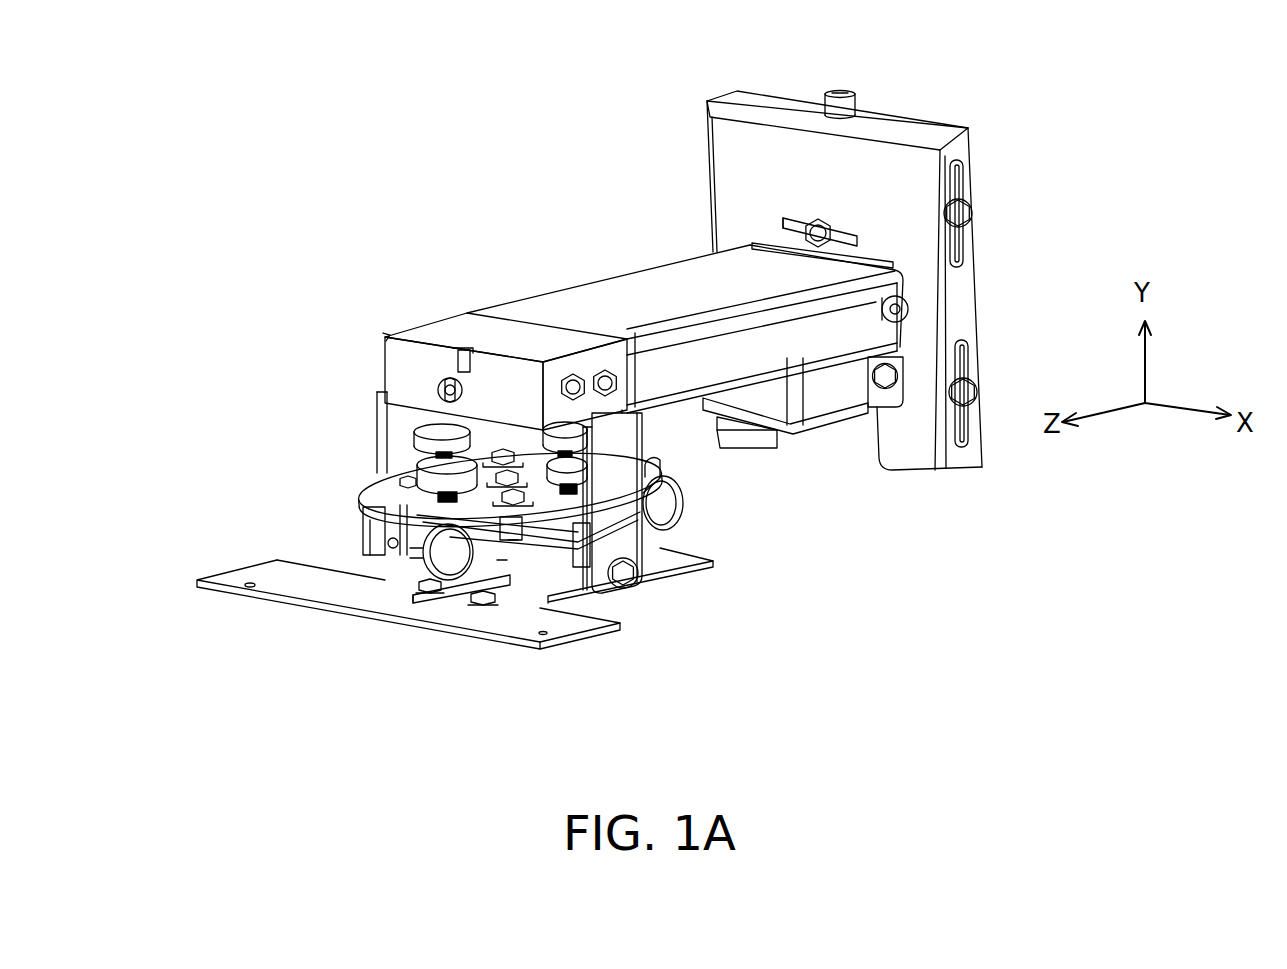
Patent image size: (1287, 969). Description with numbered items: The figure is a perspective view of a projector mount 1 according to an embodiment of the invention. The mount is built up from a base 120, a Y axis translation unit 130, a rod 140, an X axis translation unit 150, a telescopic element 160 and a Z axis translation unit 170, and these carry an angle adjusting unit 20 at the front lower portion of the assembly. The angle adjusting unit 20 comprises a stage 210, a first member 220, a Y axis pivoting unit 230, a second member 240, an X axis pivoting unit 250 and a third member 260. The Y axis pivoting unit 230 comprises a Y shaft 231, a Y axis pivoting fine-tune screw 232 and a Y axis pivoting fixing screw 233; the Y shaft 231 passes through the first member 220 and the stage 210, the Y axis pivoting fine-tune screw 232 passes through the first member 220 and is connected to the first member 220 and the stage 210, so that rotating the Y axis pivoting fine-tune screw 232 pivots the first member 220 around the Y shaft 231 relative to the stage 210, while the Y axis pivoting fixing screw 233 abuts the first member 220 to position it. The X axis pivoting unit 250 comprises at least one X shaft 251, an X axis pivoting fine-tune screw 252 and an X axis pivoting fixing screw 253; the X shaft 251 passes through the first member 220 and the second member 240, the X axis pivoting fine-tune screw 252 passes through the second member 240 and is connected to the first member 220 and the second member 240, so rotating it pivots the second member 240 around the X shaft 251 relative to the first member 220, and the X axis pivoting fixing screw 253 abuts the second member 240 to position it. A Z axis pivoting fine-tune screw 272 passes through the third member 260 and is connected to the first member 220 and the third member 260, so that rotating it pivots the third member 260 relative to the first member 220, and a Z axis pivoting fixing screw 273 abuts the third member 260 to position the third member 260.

The projector mount 1 is at (243, 136).
The angle adjusting unit 20 is at (679, 602).
The base 120 is at (967, 150).
The Y axis translation unit 130 is at (855, 103).
The rod 140 is at (600, 293).
The X axis translation unit 150 is at (898, 355).
The telescopic element 160 is at (443, 333).
The Z axis translation unit 170 is at (440, 388).
The stage 210 is at (363, 515).
The first member 220 is at (370, 497).
The Y axis pivoting unit 230 is at (1097, 720).
The Y shaft 231 is at (513, 477).
The Y axis pivoting fine-tune screw 232 is at (665, 505).
The Y axis pivoting fixing screw 233 is at (453, 563).
The second member 240 is at (513, 553).
The X axis pivoting unit 250 is at (1097, 585).
The X shaft 251 is at (623, 580).
The X axis pivoting fine-tune screw 252 is at (438, 460).
The X axis pivoting fixing screw 253 is at (567, 442).
The third member 260 is at (505, 565).
The Z axis pivoting fine-tune screw 272 is at (573, 470).
The Z axis pivoting fixing screw 273 is at (440, 428).